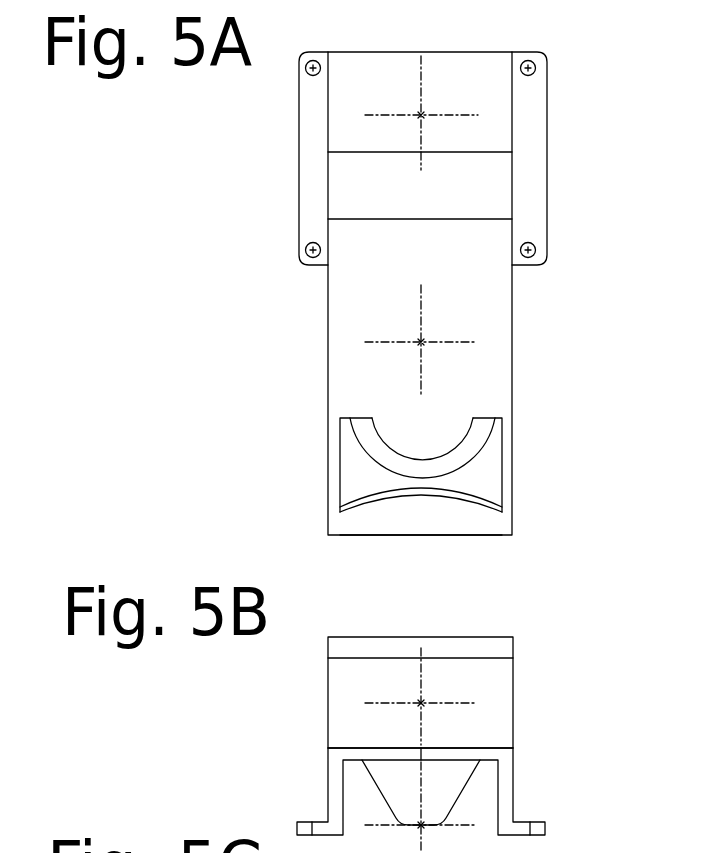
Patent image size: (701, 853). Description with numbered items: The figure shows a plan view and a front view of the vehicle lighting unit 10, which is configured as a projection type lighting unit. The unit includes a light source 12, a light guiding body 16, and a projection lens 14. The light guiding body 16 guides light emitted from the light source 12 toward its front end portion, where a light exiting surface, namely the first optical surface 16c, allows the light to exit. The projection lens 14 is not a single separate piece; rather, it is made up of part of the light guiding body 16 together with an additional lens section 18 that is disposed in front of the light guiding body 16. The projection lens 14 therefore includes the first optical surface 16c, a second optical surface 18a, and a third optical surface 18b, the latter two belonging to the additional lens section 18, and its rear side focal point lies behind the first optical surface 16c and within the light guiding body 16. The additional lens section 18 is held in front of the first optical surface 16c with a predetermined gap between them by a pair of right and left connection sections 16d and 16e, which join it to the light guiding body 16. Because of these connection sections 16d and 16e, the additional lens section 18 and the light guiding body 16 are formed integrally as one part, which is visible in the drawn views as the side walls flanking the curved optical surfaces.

In FIG. 5A, the vehicle lighting unit 10 is at (444, 50).
In FIG. 5B, the vehicle lighting unit 10 is at (442, 632).
In FIG. 5A, the light source 12 is at (417, 111).
In FIG. 5A, the projection lens 14 is at (576, 451).
In FIG. 5A, the light guiding body 16 is at (329, 323).
In FIG. 5B, the light guiding body 16 is at (514, 645).
In FIG. 5A, the first optical surface 16c is at (477, 451).
In FIG. 5A, the connection section 16d is at (513, 421).
In FIG. 5A, the connection section 16e is at (329, 448).
In FIG. 5A, the additional lens section 18 is at (372, 515).
In FIG. 5A, the second optical surface 18a is at (485, 492).
In FIG. 5A, the third optical surface 18b is at (490, 536).
In FIG. 5B, the third optical surface 18b is at (514, 700).